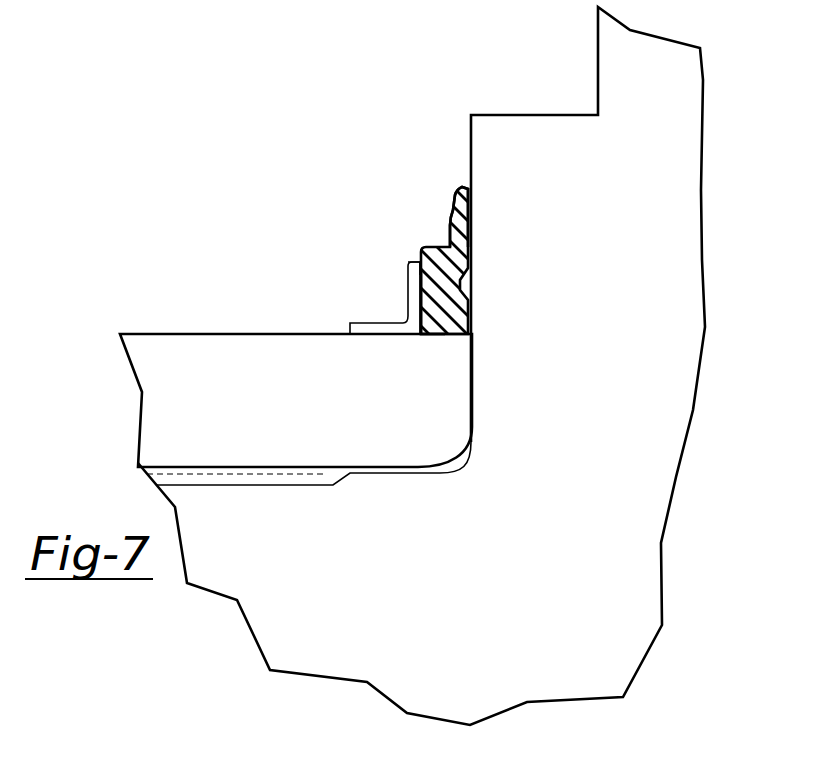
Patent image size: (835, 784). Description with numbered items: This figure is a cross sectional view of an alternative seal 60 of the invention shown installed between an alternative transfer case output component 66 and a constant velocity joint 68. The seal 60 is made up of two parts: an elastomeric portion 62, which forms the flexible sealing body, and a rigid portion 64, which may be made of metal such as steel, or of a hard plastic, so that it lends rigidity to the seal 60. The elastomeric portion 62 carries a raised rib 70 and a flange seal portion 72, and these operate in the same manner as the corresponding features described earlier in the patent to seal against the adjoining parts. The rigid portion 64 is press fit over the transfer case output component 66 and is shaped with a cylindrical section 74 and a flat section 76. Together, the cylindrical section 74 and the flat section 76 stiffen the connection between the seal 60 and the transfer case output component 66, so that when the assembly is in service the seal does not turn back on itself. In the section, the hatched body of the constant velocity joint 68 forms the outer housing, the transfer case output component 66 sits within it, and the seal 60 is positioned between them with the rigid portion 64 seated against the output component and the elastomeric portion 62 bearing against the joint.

The seal 60 is at (443, 257).
The elastomeric portion 62 is at (430, 288).
The rigid portion 64 is at (385, 333).
The transfer case output component 66 is at (190, 360).
The constant velocity joint 68 is at (652, 192).
The raised rib 70 is at (470, 313).
The flange seal portion 72 is at (467, 212).
The cylindrical section 74 is at (362, 323).
The flat section 76 is at (420, 268).